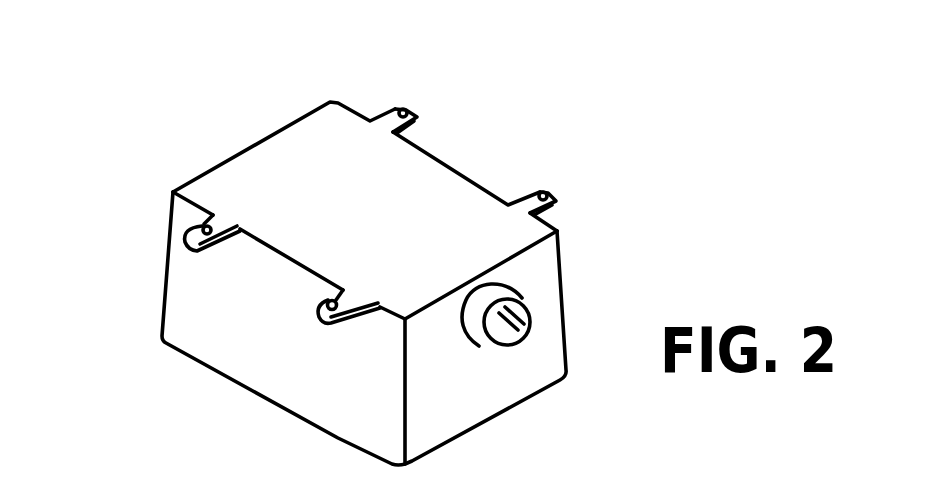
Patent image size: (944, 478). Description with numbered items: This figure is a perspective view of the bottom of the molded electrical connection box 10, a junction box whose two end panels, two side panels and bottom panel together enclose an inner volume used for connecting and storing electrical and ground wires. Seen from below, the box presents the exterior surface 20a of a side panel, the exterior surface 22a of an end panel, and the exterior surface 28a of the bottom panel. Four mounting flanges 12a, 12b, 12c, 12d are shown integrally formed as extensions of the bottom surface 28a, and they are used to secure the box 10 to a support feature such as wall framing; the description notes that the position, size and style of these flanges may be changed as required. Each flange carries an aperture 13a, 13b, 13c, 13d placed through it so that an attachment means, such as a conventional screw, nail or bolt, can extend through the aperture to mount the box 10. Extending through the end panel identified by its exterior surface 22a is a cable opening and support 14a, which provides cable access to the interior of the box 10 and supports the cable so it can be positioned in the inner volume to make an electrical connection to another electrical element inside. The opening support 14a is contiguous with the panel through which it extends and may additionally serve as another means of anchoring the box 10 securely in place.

The molded electrical connection box 10 is at (213, 94).
The mounting flange 12a is at (322, 328).
The mounting flange 12b is at (203, 253).
The mounting flange 12c is at (410, 108).
The mounting flange 12d is at (547, 195).
The aperture 13a is at (348, 302).
The aperture 13b is at (196, 229).
The aperture 13c is at (401, 106).
The aperture 13d is at (540, 211).
The cable opening and support 14a is at (503, 352).
The exterior surface of side panel 20a is at (248, 373).
The exterior surface of end panel 22a is at (532, 373).
The exterior surface of bottom panel 28a is at (365, 210).